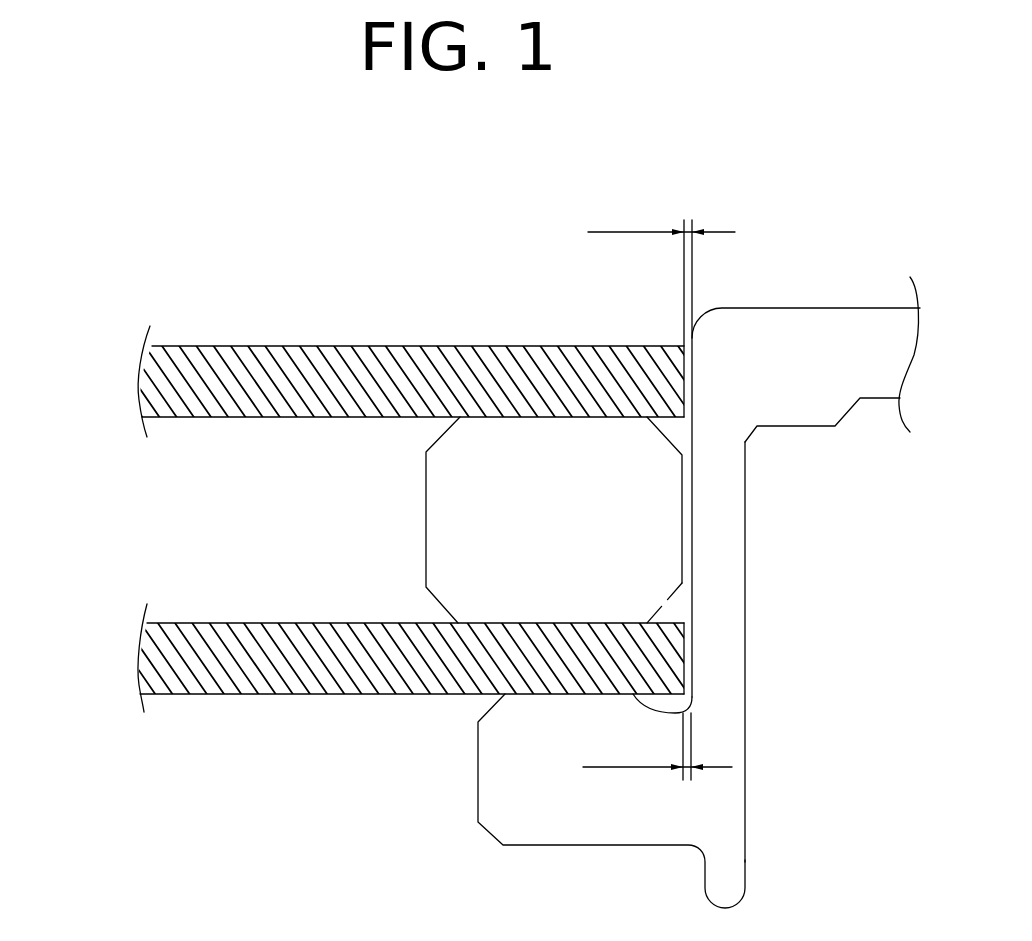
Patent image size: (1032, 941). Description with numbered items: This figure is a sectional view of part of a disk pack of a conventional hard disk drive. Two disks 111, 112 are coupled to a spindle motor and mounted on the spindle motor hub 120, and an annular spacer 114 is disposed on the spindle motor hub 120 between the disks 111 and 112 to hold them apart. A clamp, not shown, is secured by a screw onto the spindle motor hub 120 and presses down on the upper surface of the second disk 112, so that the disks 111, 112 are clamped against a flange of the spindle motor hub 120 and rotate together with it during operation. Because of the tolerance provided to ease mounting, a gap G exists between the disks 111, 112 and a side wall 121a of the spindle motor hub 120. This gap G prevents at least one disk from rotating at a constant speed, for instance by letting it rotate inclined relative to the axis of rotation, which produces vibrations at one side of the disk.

The disk 111 is at (193, 657).
The disk 112 is at (197, 380).
The annular spacer 114 is at (473, 513).
The spindle motor hub 120 is at (792, 290).
The side wall 121a is at (730, 530).
The gap G is at (659, 502).